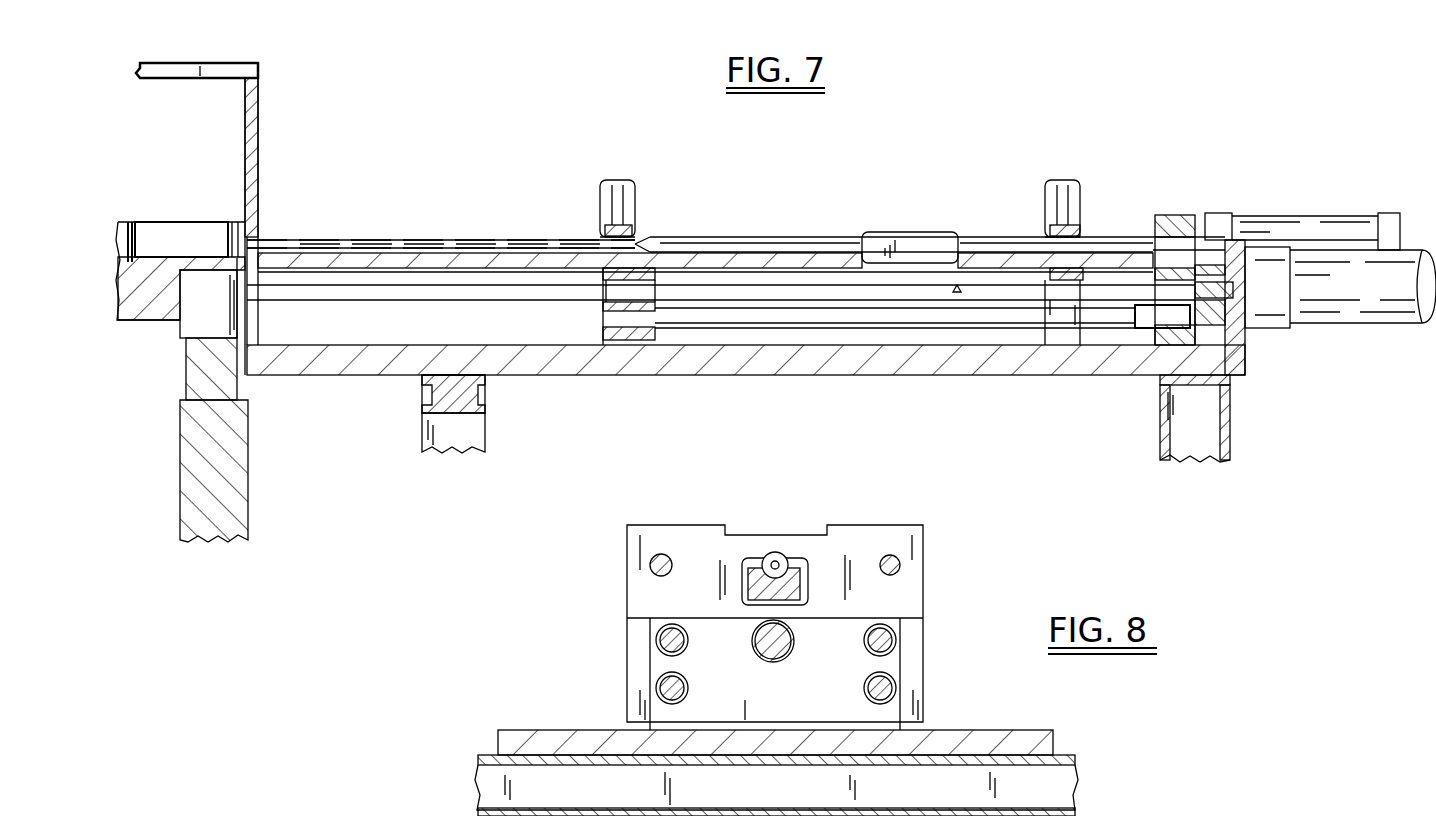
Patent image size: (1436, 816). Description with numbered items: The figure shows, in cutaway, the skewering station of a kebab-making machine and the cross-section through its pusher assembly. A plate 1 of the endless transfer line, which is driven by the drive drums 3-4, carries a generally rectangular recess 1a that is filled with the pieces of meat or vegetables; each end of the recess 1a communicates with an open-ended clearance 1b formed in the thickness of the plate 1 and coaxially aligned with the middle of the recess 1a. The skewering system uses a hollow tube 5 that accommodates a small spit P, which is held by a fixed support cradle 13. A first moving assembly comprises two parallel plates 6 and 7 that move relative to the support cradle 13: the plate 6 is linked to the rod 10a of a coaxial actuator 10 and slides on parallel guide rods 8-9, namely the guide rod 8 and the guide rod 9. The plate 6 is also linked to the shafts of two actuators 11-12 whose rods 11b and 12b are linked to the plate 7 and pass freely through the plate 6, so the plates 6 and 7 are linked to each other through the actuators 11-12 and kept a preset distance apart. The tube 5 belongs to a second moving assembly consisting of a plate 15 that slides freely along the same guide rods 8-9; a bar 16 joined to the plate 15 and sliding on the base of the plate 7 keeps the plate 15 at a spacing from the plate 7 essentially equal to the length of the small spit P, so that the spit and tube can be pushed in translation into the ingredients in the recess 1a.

In FIG. 7, the plate 1 is at (151, 335).
In FIG. 7, the recess 1a is at (123, 223).
In FIG. 7, the open-ended clearance 1b is at (150, 235).
In FIG. 7, the drive drums 3-4 is at (245, 465).
In FIG. 7, the hollow tube 5 is at (410, 240).
In FIG. 8, the hollow tube 5 is at (790, 548).
In FIG. 7, the plate 6 is at (1157, 345).
In FIG. 8, the plate 6 is at (687, 538).
In FIG. 7, the plate 7 is at (1058, 275).
In FIG. 7, the guide rod 8 is at (1152, 507).
In FIG. 8, the guide rod 8 is at (890, 627).
In FIG. 8, the guide rod 9 is at (663, 632).
In FIG. 7, the parallel guide rods 8-9 is at (943, 288).
In FIG. 7, the coaxial actuator 10 is at (1362, 331).
In FIG. 7, the actuator rod 10a is at (1238, 372).
In FIG. 8, the actuator rod 10a is at (785, 630).
In FIG. 7, the actuators 11-12 is at (1314, 208).
In FIG. 8, the actuator rod 11b is at (652, 560).
In FIG. 8, the actuator rod 12b is at (897, 560).
In FIG. 7, the fixed support cradle 13 is at (922, 242).
In FIG. 8, the fixed support cradle 13 is at (790, 550).
In FIG. 7, the plate 15 is at (645, 218).
In FIG. 7, the bar 16 is at (768, 318).
In FIG. 8, the bar 16 is at (890, 690).
In FIG. 7, the small spit P is at (797, 245).